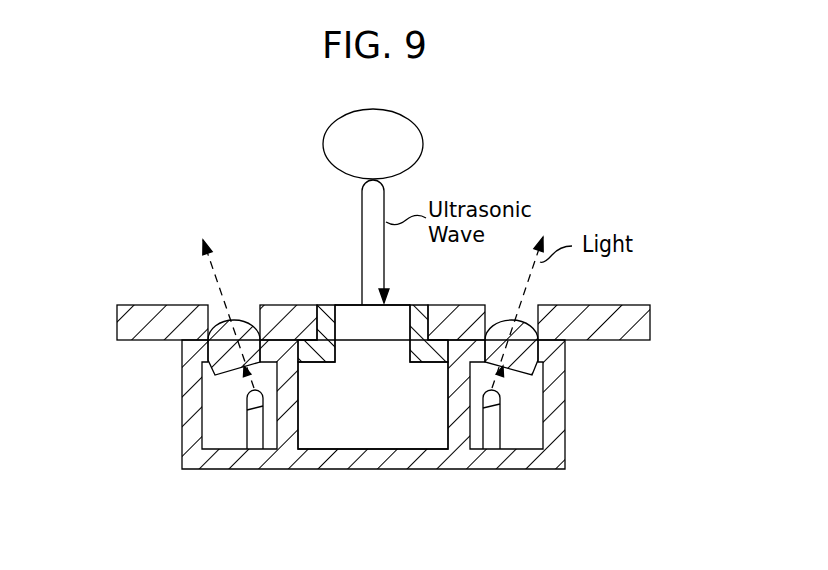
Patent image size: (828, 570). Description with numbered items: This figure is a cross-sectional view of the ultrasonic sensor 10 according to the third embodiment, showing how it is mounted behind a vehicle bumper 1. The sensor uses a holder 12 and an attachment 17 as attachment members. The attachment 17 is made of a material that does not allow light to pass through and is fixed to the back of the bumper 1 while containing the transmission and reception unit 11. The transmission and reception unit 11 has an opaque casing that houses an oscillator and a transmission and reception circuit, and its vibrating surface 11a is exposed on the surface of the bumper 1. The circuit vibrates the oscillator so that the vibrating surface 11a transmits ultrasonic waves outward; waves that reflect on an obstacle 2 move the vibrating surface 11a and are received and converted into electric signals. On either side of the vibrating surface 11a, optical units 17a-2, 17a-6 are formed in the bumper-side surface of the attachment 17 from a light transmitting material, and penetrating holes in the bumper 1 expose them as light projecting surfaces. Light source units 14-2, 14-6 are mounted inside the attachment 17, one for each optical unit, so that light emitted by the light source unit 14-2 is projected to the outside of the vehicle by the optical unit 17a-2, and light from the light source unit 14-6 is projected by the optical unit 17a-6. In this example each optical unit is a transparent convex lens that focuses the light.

The bumper 1 is at (152, 304).
The obstacle 2 is at (423, 143).
The ultrasonic sensor 10 is at (128, 431).
The transmission and reception unit 11 is at (373, 374).
The vibrating surface 11a is at (350, 305).
The holder 12 is at (428, 352).
The light source unit 14-2 is at (246, 405).
The light source unit 14-6 is at (503, 400).
The attachment 17 is at (462, 455).
The optical unit 17a-2 is at (240, 365).
The optical unit 17a-6 is at (524, 328).